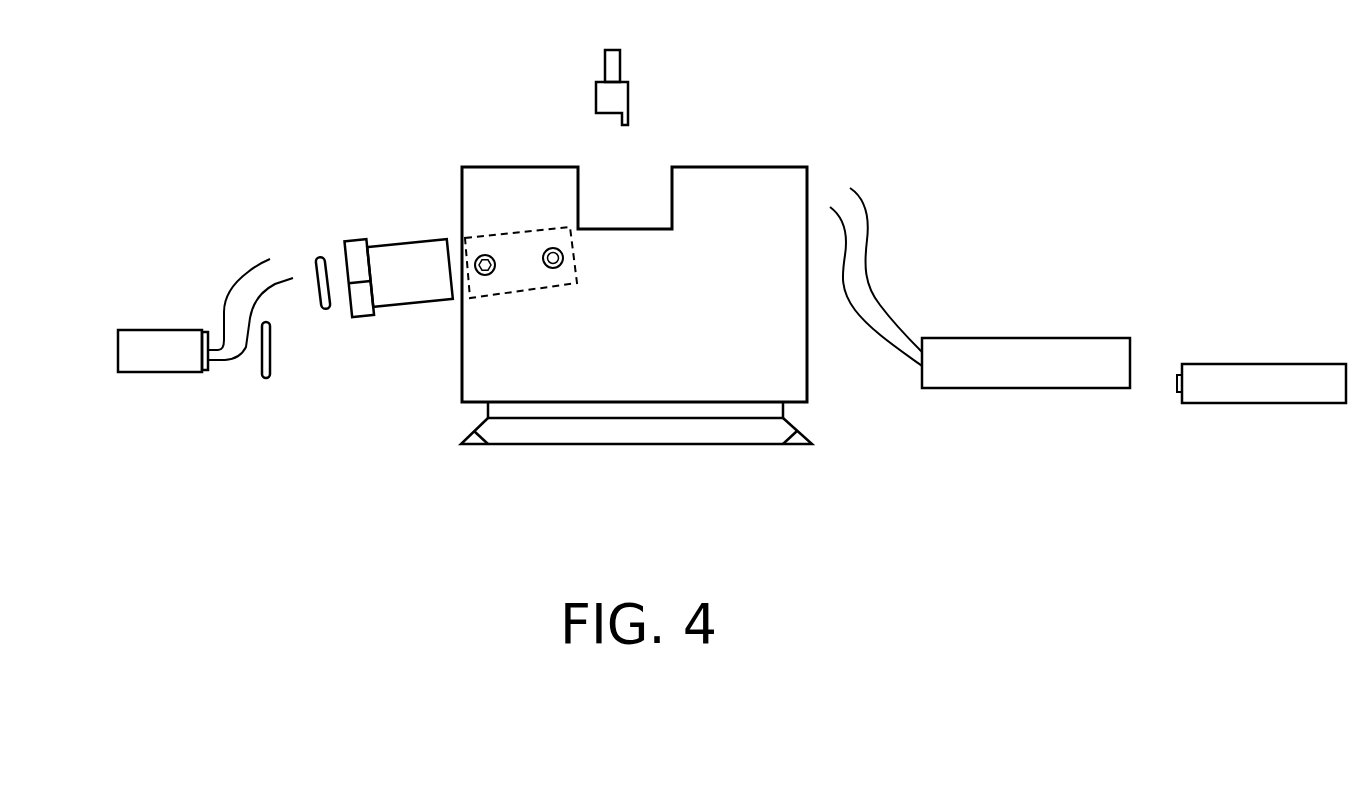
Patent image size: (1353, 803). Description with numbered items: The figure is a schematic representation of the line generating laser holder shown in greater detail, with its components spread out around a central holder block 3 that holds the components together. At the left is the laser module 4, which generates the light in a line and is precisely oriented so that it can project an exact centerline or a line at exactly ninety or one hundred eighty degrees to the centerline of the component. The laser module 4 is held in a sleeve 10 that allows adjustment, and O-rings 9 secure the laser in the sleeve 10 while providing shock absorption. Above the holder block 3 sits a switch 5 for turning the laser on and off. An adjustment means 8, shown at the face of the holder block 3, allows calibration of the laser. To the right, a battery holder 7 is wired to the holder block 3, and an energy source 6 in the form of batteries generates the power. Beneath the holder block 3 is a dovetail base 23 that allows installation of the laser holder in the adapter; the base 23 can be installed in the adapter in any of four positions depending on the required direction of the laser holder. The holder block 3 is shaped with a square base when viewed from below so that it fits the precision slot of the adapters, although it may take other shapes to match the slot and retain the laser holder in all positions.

The holder block 3 is at (620, 432).
The laser module 4 is at (117, 353).
The switch 5 is at (620, 70).
The energy source 6 is at (1272, 388).
The battery holder 7 is at (1037, 368).
The adjustment means 8 is at (483, 255).
The O-rings 9 is at (327, 310).
The sleeve 10 is at (392, 253).
The dovetail base 23 is at (812, 447).